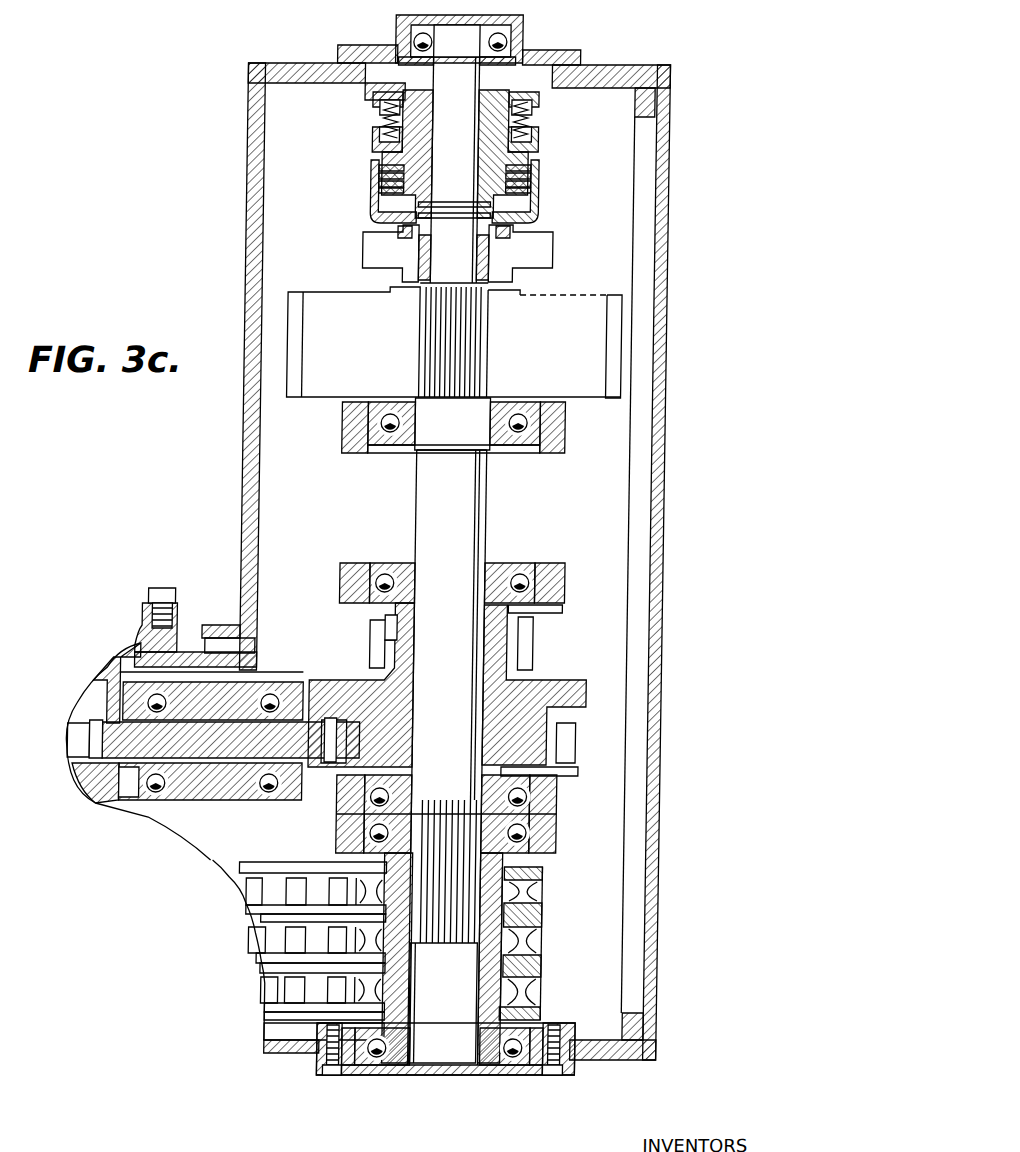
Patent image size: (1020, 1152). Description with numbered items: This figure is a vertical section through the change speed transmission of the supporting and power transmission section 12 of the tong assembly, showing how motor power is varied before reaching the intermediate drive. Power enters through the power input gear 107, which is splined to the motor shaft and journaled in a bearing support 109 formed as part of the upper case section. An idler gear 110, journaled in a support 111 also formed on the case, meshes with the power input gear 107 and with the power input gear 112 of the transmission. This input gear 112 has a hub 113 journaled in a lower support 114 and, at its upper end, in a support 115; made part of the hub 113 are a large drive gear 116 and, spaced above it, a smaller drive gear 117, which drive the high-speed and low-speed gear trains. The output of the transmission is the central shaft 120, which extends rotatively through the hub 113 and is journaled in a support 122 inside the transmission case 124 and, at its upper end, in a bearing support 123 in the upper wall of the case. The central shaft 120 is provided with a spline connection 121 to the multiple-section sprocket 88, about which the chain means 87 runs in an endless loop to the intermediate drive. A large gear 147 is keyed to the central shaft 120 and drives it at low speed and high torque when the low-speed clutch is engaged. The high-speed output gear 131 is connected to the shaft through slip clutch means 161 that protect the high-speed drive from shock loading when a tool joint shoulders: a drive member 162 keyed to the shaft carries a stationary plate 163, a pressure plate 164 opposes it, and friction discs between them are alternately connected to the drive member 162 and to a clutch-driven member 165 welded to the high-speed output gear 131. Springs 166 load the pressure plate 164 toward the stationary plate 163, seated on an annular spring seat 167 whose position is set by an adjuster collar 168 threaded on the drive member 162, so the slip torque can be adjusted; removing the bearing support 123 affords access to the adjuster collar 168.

The supporting and power transmission section 12 is at (178, 617).
The chain means 87 is at (296, 862).
The sprocket 88 is at (508, 940).
The power input gear 107 is at (72, 728).
The bearing support 109 is at (75, 778).
The idler gear 110 is at (110, 790).
The support 111 is at (132, 800).
The power input gear 112 is at (545, 737).
The hub 113 is at (520, 771).
The lower support 114 is at (552, 820).
The support 115 is at (352, 578).
The large drive gear 116 is at (558, 690).
The smaller drive gear 117 is at (382, 632).
The central shaft 120 is at (434, 511).
The spline connection 121 is at (460, 858).
The support 122 is at (352, 440).
The bearing support 123 is at (520, 30).
The transmission case 124 is at (620, 84).
The high-speed output gear 131 is at (378, 245).
The large gear 147 is at (575, 290).
The slip clutch means 161 is at (372, 212).
The drive member 162 is at (500, 158).
The stationary plate 163 is at (540, 224).
The pressure plate 164 is at (545, 137).
The clutch-driven member 165 is at (540, 212).
The springs 166 is at (382, 126).
The annular spring seat 167 is at (540, 107).
The adjuster collar 168 is at (400, 60).